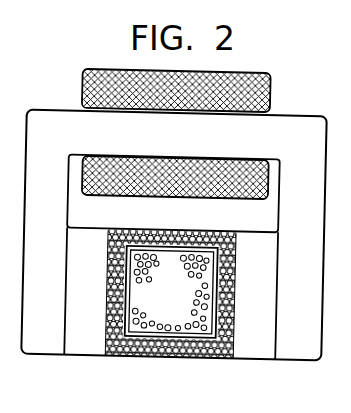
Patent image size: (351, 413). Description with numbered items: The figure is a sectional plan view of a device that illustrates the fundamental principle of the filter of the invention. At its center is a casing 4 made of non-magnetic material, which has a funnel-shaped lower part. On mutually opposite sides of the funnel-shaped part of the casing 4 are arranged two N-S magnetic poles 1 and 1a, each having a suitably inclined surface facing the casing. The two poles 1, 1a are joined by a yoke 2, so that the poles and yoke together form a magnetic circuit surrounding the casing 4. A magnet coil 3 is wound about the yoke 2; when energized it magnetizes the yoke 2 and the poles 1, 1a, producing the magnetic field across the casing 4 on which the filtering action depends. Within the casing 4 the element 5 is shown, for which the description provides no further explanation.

The magnetic pole 1 is at (82, 342).
The magnetic pole 1a is at (262, 348).
The yoke 2 is at (27, 203).
The magnet coil 3 is at (81, 88).
The casing 4 is at (180, 350).
The inner container 5 is at (203, 290).